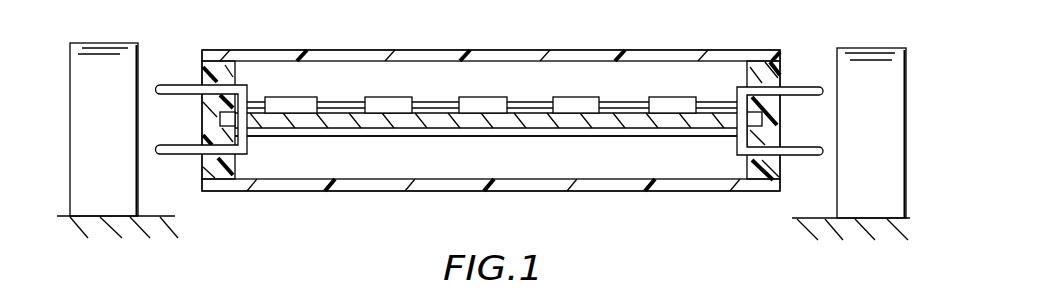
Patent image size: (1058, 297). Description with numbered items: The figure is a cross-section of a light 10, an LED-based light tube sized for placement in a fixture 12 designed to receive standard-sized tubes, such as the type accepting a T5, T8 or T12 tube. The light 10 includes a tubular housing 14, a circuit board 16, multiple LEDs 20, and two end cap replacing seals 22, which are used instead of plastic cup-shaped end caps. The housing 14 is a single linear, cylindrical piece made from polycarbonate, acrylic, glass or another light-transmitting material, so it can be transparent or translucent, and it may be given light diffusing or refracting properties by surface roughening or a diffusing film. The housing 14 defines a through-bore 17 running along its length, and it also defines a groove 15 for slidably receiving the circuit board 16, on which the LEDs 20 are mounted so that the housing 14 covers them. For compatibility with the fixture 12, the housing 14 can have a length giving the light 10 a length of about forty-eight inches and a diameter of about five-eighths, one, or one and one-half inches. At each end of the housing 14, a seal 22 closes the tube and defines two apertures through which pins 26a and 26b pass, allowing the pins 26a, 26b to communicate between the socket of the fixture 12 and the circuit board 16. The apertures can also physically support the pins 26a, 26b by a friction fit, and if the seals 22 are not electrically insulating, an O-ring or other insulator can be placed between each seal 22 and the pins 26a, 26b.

The light 10 is at (348, 204).
The fixture 12 is at (110, 202).
The tubular housing 14 is at (588, 191).
The groove 15 is at (437, 115).
The circuit board 16 is at (580, 122).
The through-bore 17 is at (382, 79).
The LEDs 20 is at (297, 105).
The end cap replacing seal 22 is at (213, 173).
The pin 26a is at (163, 157).
The pin 26b is at (157, 83).